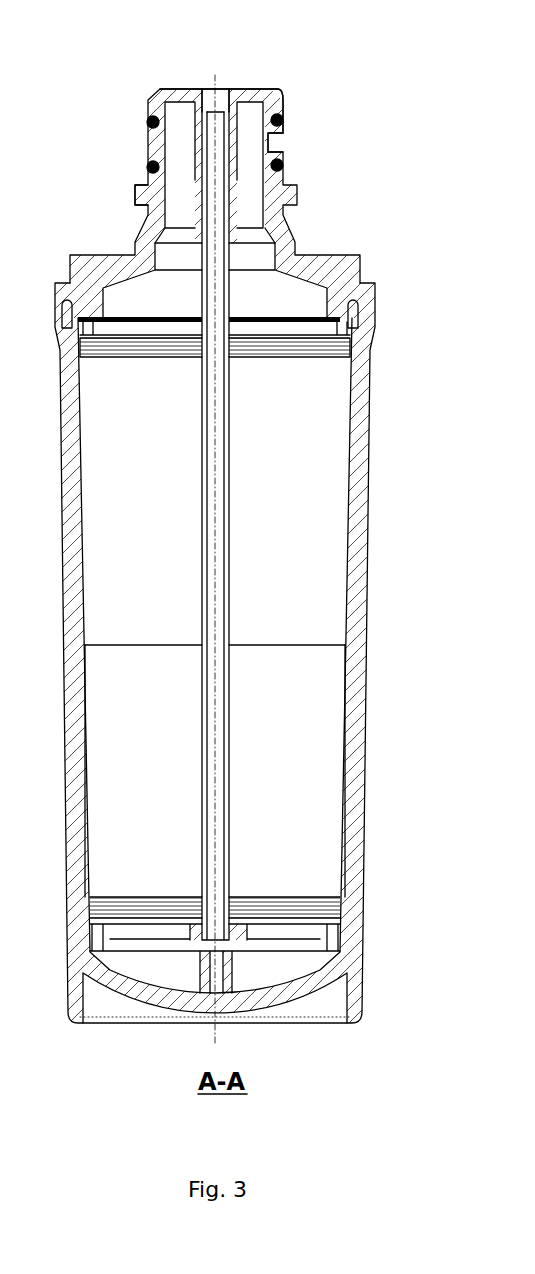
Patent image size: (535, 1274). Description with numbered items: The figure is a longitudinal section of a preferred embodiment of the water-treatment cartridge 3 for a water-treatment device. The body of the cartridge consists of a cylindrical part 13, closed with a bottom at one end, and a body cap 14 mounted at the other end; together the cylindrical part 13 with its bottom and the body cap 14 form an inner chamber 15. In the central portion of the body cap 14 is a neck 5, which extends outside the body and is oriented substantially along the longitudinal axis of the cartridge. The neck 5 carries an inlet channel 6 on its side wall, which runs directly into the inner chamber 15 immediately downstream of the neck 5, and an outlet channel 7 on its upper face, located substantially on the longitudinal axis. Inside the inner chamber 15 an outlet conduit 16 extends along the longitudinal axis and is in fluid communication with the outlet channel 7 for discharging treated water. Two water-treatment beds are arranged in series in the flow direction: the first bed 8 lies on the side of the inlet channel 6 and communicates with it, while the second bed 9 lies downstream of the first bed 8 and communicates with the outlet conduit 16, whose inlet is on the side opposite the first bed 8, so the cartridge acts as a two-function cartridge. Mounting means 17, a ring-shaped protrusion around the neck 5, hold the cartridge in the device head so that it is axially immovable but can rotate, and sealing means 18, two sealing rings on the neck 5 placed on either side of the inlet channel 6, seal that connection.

The water-treatment cartridge 3 is at (422, 60).
The neck 5 is at (275, 92).
The inlet channel 6 is at (273, 143).
The outlet channel 7 is at (214, 88).
The first bed 8 is at (304, 487).
The second bed 9 is at (306, 708).
The cylindrical part 13 is at (367, 860).
The body cap 14 is at (334, 258).
The inner chamber 15 is at (271, 297).
The outlet conduit 16 is at (232, 808).
The mounting means 17 is at (132, 200).
The sealing means 18 is at (143, 122).